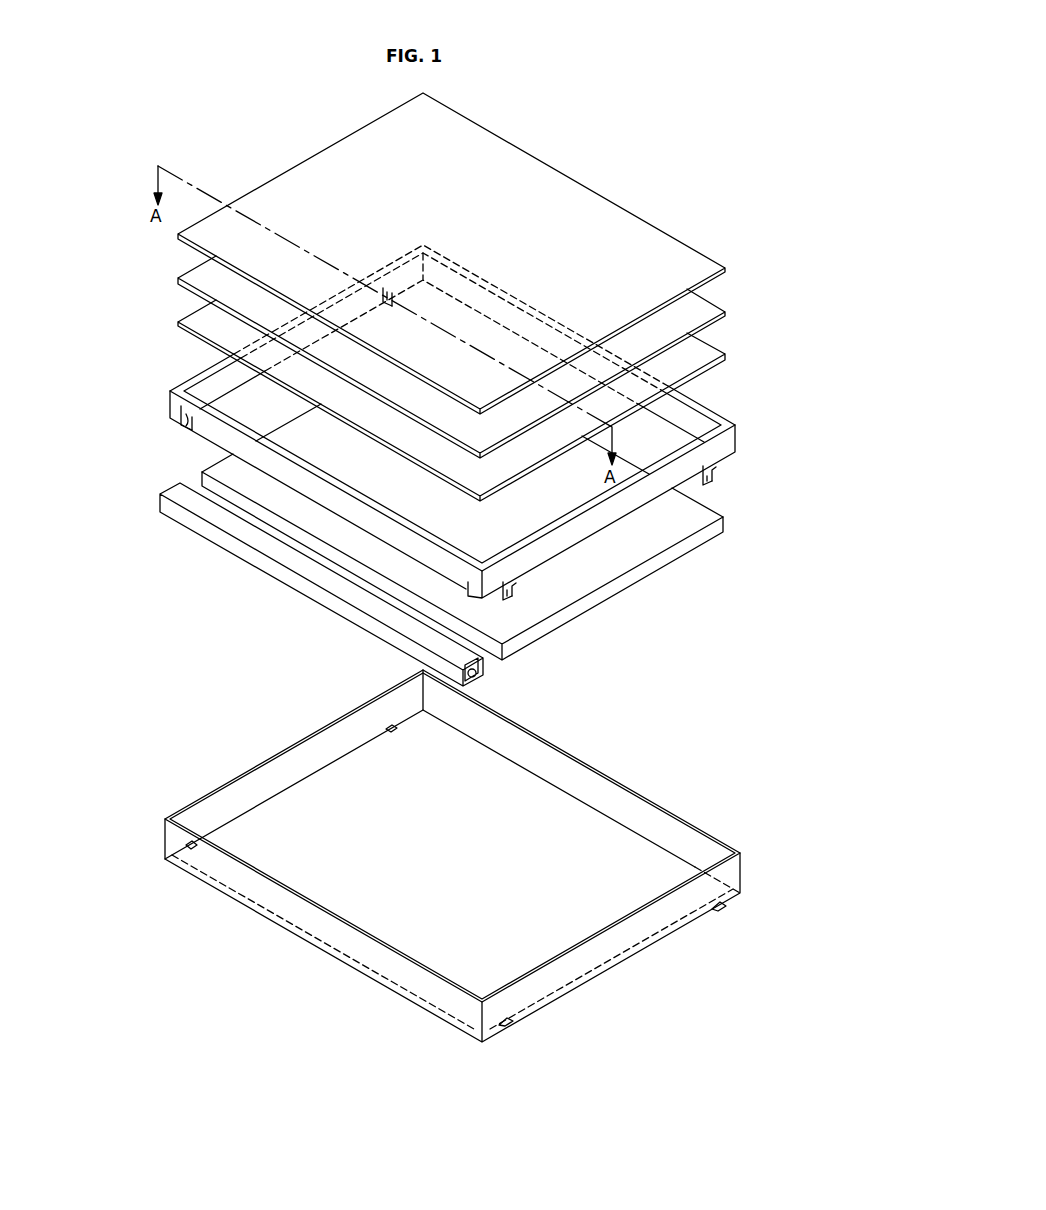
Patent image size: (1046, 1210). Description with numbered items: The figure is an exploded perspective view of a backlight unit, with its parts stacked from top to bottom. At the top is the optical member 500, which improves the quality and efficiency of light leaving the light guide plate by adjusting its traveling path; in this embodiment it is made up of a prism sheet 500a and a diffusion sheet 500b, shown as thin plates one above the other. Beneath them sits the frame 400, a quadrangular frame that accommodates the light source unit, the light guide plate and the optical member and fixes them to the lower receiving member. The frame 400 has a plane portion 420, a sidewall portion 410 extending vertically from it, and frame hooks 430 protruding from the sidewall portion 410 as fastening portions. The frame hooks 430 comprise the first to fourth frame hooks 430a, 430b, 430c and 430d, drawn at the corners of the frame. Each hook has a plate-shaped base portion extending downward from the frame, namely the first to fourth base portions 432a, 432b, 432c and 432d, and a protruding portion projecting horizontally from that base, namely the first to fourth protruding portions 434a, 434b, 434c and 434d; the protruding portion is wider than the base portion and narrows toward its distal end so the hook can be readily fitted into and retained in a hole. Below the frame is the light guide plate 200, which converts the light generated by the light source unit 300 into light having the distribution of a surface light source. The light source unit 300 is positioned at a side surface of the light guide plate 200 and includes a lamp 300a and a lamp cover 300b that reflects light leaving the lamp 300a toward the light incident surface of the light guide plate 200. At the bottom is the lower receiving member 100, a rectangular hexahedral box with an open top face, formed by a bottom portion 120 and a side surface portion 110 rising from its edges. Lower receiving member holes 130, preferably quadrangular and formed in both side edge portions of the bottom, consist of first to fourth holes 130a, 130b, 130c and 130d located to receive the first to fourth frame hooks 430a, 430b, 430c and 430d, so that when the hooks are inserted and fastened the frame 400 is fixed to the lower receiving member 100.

The lower receiving member 100 is at (456, 886).
The side surface portion 110 is at (647, 812).
The bottom portion 120 is at (660, 858).
The lower receiving member holes 130 is at (456, 886).
The first hole 130a is at (720, 907).
The second hole 130b is at (512, 1020).
The third hole 130c is at (192, 845).
The fourth hole 130d is at (392, 728).
The light guide plate 200 is at (724, 520).
The light source unit 300 is at (402, 599).
The lamp 300a is at (472, 676).
The lamp cover 300b is at (480, 657).
The frame 400 is at (447, 450).
The sidewall portion 410 is at (706, 411).
The plane portion 420 is at (700, 426).
The frame hooks 430 is at (447, 463).
The first frame hook 430a is at (787, 468).
The second frame hook 430b is at (611, 616).
The third frame hook 430c is at (108, 415).
The fourth frame hook 430d is at (217, 303).
The first base portion 432a is at (707, 475).
The second base portion 432b is at (507, 591).
The third base portion 432c is at (186, 418).
The fourth base portion 432d is at (387, 297).
The first protruding portion 434a is at (718, 464).
The second protruding portion 434b is at (512, 588).
The third protruding portion 434c is at (183, 418).
The fourth protruding portion 434d is at (388, 296).
The optical member 500 is at (515, 297).
The prism sheet 500a is at (733, 268).
The diffusion sheet 500b is at (728, 355).